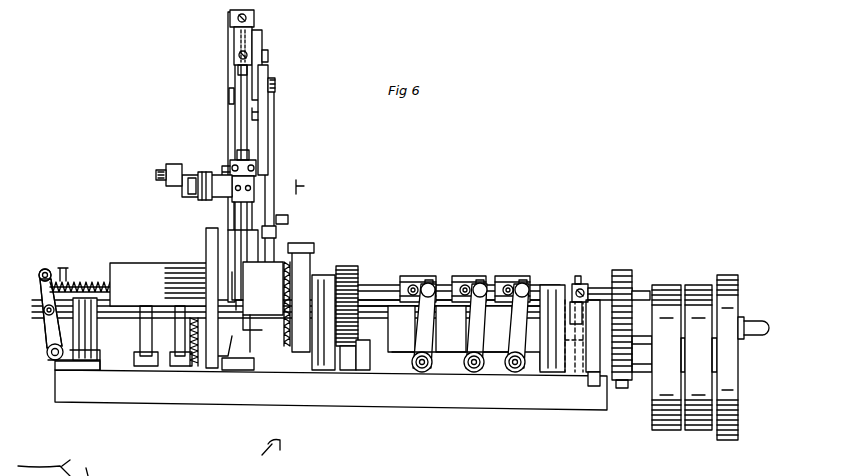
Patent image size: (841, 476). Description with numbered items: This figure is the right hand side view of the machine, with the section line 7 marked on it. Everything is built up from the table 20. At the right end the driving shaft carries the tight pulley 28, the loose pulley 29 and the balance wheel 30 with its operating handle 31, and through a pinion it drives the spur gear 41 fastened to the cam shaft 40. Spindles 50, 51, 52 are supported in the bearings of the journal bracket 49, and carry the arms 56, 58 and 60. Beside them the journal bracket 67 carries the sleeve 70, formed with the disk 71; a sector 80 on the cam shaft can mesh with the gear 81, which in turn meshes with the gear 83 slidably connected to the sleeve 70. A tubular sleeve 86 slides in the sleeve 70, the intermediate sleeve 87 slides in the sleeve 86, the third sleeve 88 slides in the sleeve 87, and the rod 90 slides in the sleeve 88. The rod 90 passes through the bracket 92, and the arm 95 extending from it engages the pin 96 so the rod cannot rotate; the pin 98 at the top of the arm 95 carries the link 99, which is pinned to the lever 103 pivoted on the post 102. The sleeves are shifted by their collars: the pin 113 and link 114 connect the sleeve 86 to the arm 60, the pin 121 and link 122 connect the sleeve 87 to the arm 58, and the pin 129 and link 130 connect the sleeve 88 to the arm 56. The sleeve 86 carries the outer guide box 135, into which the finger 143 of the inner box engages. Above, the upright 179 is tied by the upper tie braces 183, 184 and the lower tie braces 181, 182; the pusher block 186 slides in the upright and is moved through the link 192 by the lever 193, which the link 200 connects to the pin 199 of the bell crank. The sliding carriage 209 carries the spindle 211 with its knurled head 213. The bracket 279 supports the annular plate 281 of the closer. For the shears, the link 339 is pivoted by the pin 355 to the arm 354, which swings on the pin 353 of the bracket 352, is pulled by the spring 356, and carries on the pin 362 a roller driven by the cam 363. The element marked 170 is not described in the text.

The table 20 is at (372, 408).
The tight pulley 28 is at (660, 430).
The loose pulley 29 is at (697, 430).
The balance wheel 30 is at (724, 440).
The operating handle 31 is at (764, 320).
The cam shaft 40 is at (34, 306).
The spur gear 41 is at (622, 270).
The journal bracket 49 is at (447, 370).
The spindle 50 is at (516, 372).
The spindle 51 is at (472, 372).
The spindle 52 is at (421, 372).
The arm 56 is at (518, 325).
The arm 58 is at (476, 325).
The arm 60 is at (424, 325).
The journal bracket 67 is at (323, 322).
The sleeve 70 is at (366, 286).
The disk 71 is at (310, 262).
The sector 80 is at (342, 372).
The gear 81 is at (360, 372).
The gear 83 is at (360, 272).
The tubular sleeve 86 is at (395, 278).
The intermediate sleeve 87 is at (451, 329).
The third sleeve 88 is at (497, 329).
The rod 90 is at (640, 290).
The bracket 92 is at (556, 380).
The arm 95 is at (554, 300).
The pin 96 is at (630, 385).
The pin 98 is at (580, 284).
The link 99 is at (582, 276).
The post 102 is at (594, 388).
The lever 103 is at (598, 286).
The pin 113 is at (424, 274).
The link 114 is at (443, 283).
The pin 121 is at (470, 278).
The link 122 is at (462, 278).
The pin 129 is at (510, 278).
The link 130 is at (512, 278).
The outer guide box 135 is at (257, 307).
The finger 143 is at (404, 329).
The housing 170 is at (158, 314).
The upright 179 is at (227, 80).
The lower tie brace 181 is at (224, 198).
The lower tie brace 182 is at (243, 238).
The upper tie brace 183 is at (228, 104).
The upper tie brace 184 is at (258, 112).
The pusher block 186 is at (232, 48).
The link 192 is at (262, 50).
The lever 193 is at (268, 78).
The pin 199 is at (288, 218).
The link 200 is at (276, 140).
The sliding carriage 209 is at (192, 198).
The spindle 211 is at (223, 168).
The knurled head 213 is at (168, 166).
The bracket 279 is at (228, 370).
The annular plate 281 is at (213, 370).
The link 339 is at (93, 280).
The bracket 352 is at (88, 370).
The pin 353 is at (53, 362).
The arm 354 is at (50, 340).
The pin 355 is at (43, 272).
The spring 356 is at (64, 268).
The pin 362 is at (44, 296).
The cam 363 is at (80, 326).
The section line 7 is at (283, 320).